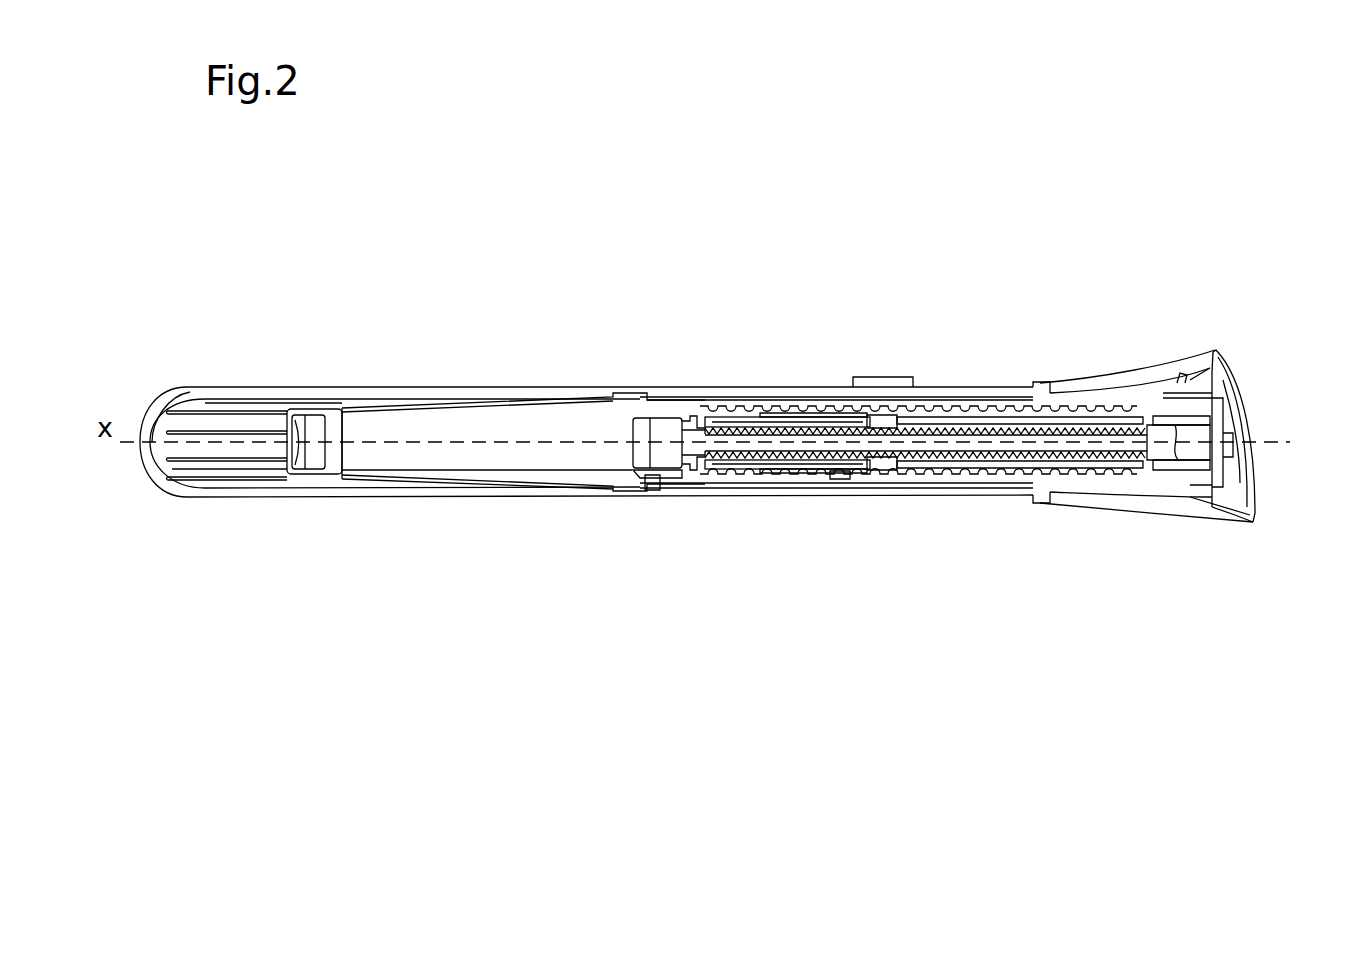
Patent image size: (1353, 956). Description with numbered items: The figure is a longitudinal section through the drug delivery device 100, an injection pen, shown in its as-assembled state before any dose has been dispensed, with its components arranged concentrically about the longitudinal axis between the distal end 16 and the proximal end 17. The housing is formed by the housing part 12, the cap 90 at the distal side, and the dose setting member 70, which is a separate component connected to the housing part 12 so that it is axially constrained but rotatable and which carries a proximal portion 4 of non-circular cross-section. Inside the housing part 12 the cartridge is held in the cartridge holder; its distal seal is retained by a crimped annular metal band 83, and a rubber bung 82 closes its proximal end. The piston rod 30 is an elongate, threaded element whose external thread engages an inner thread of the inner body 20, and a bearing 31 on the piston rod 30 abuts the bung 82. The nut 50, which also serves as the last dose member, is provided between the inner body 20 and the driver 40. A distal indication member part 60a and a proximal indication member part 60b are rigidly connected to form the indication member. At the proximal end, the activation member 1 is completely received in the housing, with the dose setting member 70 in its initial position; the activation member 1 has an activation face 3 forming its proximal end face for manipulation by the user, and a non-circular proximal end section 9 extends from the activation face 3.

The drug delivery device 100 is at (200, 196).
The distal end 16 is at (142, 418).
The proximal end 17 is at (1263, 418).
The cap 90 is at (347, 390).
The housing part 12 is at (565, 396).
The crimped annular metal band 83 is at (306, 477).
The inner body 20 is at (657, 487).
The bearing 31 is at (681, 460).
The bung 82 is at (665, 437).
The piston rod 30 is at (785, 455).
The distal indication member part 60a is at (828, 482).
The proximal indication member part 60b is at (1147, 475).
The nut 50 is at (878, 419).
The driver 40 is at (892, 422).
The dose setting member 70 is at (1175, 500).
The proximal end section 9 is at (1203, 380).
The activation member 1 is at (1218, 370).
The activation face 3 is at (1228, 395).
The proximal portion 4 is at (1220, 522).